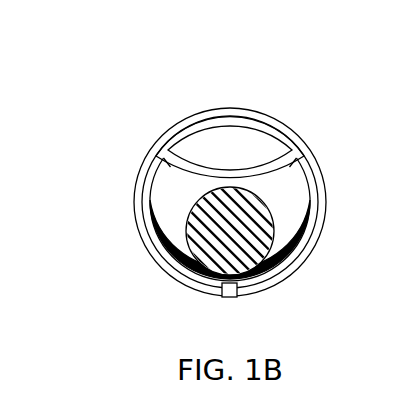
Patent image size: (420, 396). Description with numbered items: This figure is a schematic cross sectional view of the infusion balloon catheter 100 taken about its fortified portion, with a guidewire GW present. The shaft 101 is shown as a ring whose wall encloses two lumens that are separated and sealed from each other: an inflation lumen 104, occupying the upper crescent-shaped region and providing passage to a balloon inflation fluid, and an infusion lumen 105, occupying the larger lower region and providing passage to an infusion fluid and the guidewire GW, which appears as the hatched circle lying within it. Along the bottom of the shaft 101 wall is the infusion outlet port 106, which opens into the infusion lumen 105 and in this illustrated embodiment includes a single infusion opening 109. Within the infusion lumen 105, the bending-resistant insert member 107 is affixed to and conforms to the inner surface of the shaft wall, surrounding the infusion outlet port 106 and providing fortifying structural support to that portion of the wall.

The infusion balloon catheter 100 is at (233, 190).
The shaft 101 is at (140, 178).
The inflation lumen 104 is at (243, 142).
The infusion lumen 105 is at (168, 198).
The infusion outlet port 106 is at (240, 297).
The bending-resistant insert member 107 is at (160, 250).
The infusion opening 109 is at (227, 305).
The guidewire GW is at (268, 197).